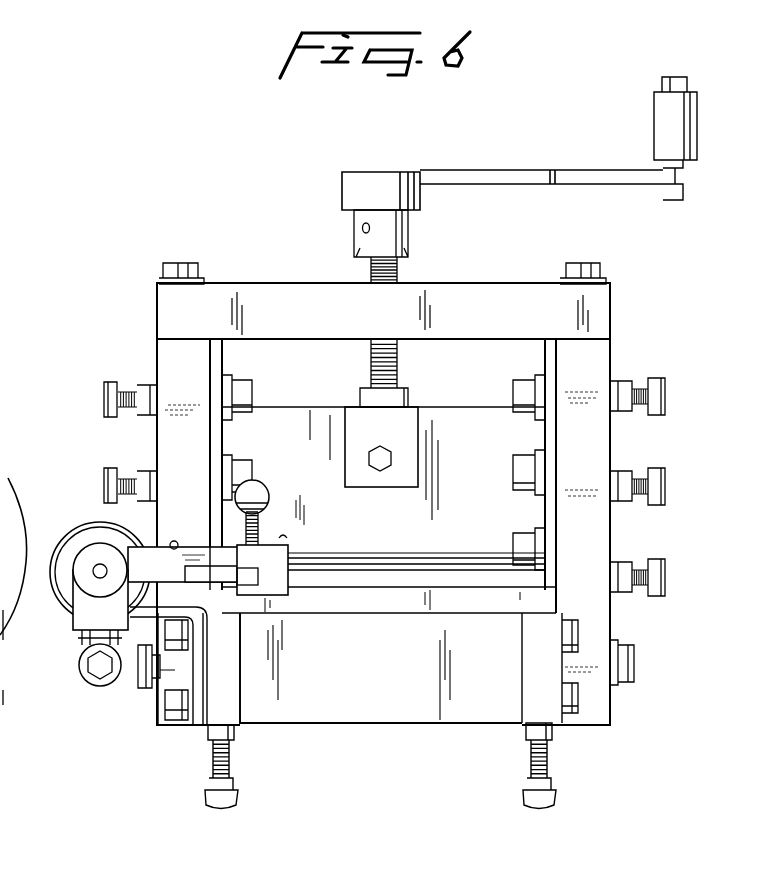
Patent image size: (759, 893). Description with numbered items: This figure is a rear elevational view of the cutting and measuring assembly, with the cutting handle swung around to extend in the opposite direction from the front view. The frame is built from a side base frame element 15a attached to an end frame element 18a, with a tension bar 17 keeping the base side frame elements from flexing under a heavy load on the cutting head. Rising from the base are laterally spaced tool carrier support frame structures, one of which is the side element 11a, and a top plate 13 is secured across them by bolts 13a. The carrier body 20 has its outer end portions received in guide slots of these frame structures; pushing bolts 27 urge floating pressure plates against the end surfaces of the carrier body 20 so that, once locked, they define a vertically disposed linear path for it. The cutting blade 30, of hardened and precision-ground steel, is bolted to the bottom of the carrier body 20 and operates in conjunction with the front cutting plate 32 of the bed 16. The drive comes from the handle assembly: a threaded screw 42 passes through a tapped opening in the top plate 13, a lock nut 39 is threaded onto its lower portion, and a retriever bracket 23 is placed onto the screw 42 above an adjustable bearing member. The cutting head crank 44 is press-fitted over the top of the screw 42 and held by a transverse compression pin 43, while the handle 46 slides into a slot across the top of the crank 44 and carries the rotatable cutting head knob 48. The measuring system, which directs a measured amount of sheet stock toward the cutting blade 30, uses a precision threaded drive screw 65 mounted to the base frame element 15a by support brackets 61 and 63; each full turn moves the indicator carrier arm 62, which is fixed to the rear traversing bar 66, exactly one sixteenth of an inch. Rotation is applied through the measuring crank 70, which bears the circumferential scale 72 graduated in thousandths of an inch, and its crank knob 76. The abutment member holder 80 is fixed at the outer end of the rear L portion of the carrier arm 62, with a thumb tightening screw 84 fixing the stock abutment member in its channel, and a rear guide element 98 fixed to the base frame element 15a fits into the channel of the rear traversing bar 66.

The side element 11a is at (172, 360).
The top plate 13 is at (283, 290).
The bolts 13a is at (175, 267).
The side base frame element 15a is at (228, 695).
The bed 16 is at (326, 608).
The tension bar 17 is at (141, 668).
The end frame element 18a is at (380, 715).
The carrier body 20 is at (470, 406).
The retriever bracket 23 is at (410, 441).
The pushing bolts 27 is at (105, 480).
The cutting blade 30 is at (346, 572).
The front cutting plate 32 is at (444, 578).
The lock nut 39 is at (404, 392).
The threaded screw 42 is at (398, 278).
The compression pin 43 is at (361, 227).
The cutting head crank 44 is at (368, 186).
The handle 46 is at (533, 172).
The cutting head knob 48 is at (694, 122).
The support bracket 61 is at (190, 705).
The indicator carrier arm 62 is at (207, 510).
The support bracket 63 is at (84, 610).
The precision threaded drive screw 65 is at (98, 568).
The rear traversing bar 66 is at (150, 565).
The measuring crank 70 is at (56, 537).
The circumferential scale 72 is at (8, 478).
The crank knob 76 is at (82, 678).
The abutment member holder 80 is at (282, 560).
The thumb tightening screw 84 is at (260, 489).
The rear guide element 98 is at (262, 532).